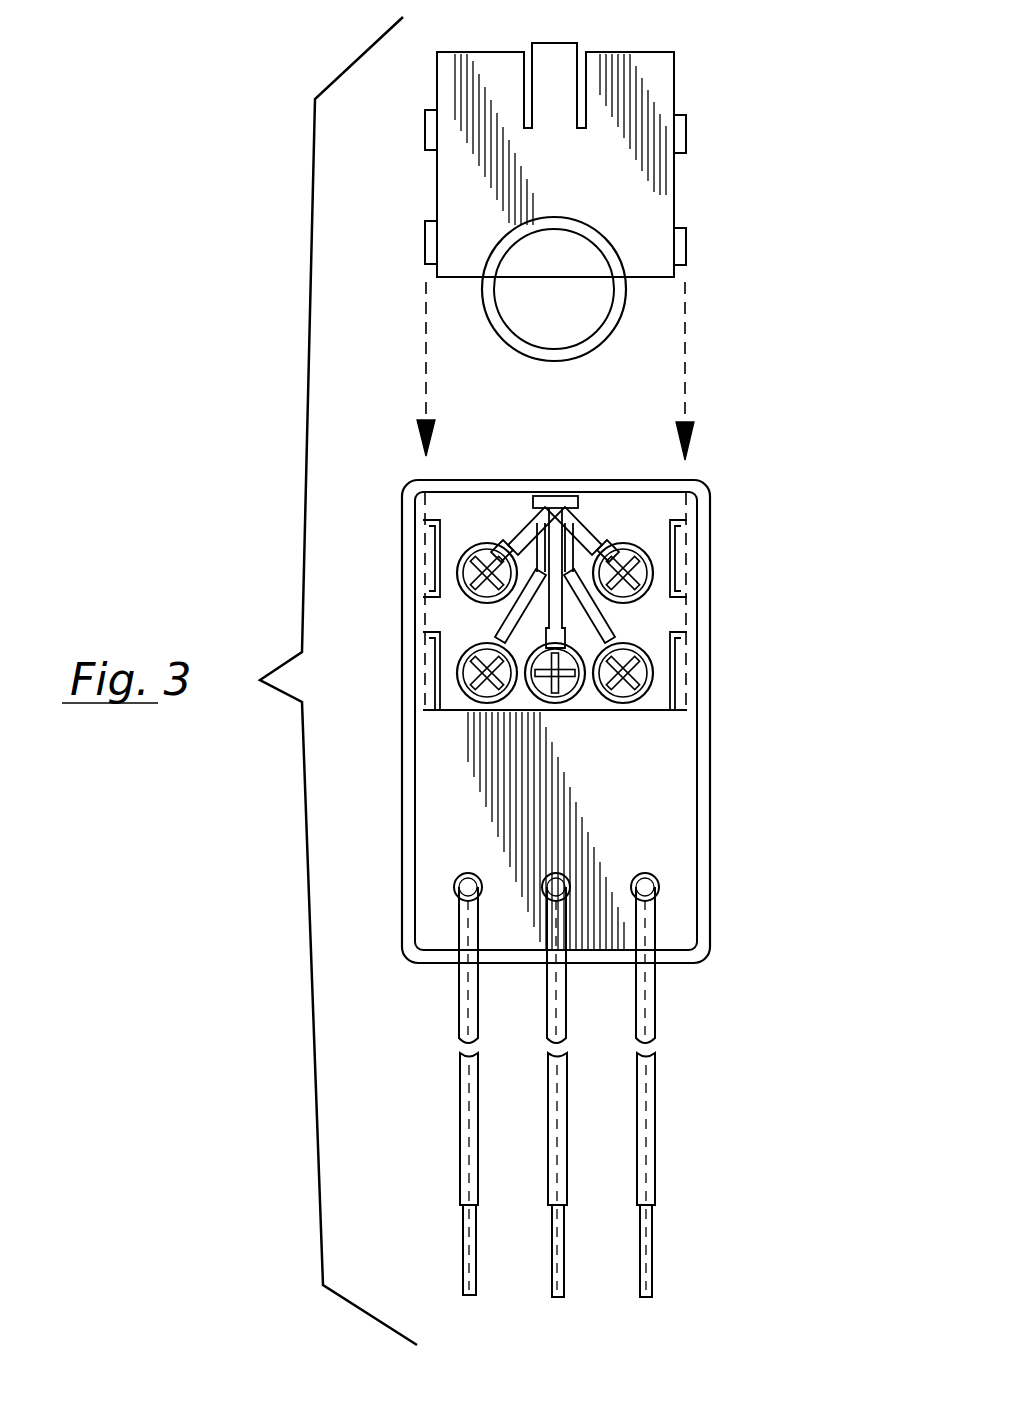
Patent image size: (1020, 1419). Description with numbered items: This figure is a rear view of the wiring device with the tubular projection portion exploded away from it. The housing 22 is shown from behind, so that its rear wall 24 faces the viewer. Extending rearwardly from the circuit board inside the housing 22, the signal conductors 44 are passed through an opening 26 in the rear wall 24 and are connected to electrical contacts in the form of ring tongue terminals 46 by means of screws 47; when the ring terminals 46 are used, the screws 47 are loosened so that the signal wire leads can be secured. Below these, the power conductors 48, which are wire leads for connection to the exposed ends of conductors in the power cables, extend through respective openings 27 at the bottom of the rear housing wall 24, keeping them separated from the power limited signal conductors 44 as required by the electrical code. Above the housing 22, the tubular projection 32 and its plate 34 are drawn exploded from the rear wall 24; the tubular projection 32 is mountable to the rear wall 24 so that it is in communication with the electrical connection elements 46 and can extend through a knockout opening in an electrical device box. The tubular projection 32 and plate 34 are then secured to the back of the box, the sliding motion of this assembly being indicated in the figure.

The housing 22 is at (404, 688).
The rear wall 24 is at (458, 750).
The opening 26 is at (568, 510).
The openings 27 is at (458, 888).
The tubular projection 32 is at (600, 344).
The plate 34 is at (665, 72).
The signal conductors 44 is at (540, 515).
The ring tongue terminal 46 is at (647, 560).
The screws 47 is at (630, 590).
The power conductors 48 is at (465, 1088).